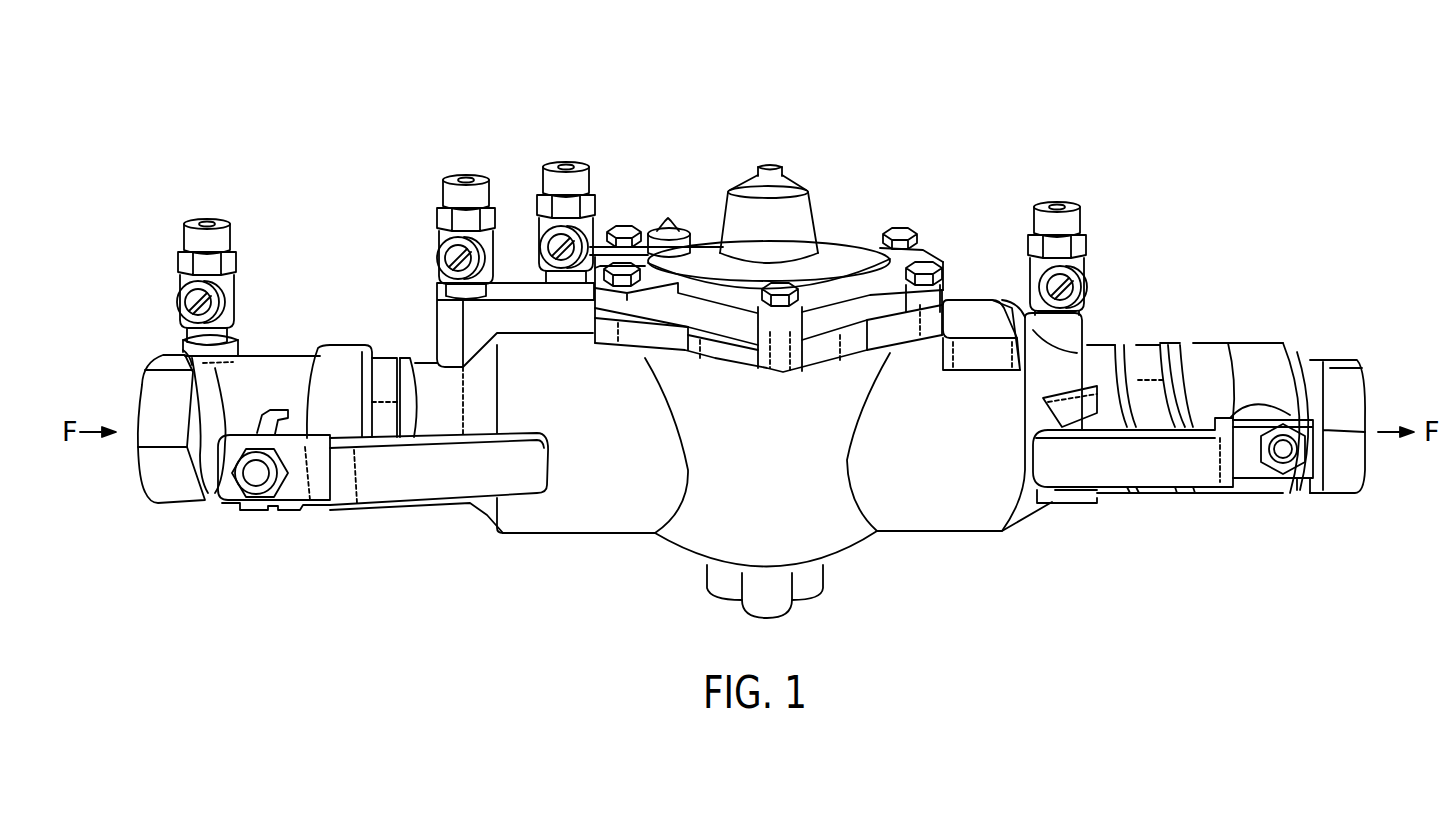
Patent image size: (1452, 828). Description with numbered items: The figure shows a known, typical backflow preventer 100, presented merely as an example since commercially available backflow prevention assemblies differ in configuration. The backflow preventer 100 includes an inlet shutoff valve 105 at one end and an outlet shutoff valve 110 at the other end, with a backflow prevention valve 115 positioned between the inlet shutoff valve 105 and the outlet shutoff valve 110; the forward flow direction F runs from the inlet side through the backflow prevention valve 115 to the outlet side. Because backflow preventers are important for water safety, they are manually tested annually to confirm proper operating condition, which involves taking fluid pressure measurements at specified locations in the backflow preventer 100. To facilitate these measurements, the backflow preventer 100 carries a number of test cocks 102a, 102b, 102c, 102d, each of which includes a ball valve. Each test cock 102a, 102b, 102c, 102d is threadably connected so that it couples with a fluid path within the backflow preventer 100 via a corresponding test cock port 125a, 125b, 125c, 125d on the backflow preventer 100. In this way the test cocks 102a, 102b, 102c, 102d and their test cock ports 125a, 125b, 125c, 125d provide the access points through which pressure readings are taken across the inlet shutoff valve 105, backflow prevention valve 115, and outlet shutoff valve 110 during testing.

The backflow preventer 100 is at (1186, 116).
The test cock 102a is at (235, 245).
The test cock 102b is at (445, 182).
The test cock 102c is at (595, 183).
The test cock 102d is at (1083, 223).
The inlet shutoff valve 105 is at (292, 512).
The outlet shutoff valve 110 is at (1248, 478).
The backflow prevention valve 115 is at (823, 550).
The test cock port 125a is at (245, 347).
The test cock port 125b is at (437, 318).
The test cock port 125c is at (540, 283).
The test cock port 125d is at (1085, 277).